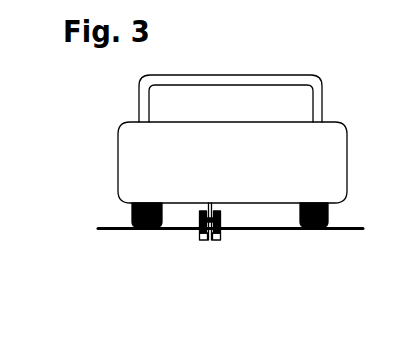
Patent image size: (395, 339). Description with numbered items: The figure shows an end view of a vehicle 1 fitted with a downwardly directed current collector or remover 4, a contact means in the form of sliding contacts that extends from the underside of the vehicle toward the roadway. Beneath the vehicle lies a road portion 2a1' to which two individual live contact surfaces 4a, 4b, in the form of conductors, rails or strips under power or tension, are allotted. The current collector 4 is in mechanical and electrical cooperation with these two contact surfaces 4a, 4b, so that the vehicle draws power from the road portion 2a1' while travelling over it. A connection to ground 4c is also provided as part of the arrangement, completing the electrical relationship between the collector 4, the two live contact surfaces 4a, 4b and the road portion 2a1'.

The vehicle 1 is at (137, 143).
The road portion 2a1' is at (230, 249).
The current collector 4 is at (173, 225).
The contact surface 4a is at (215, 242).
The contact surface 4b is at (202, 240).
The connection to ground 4c is at (200, 213).